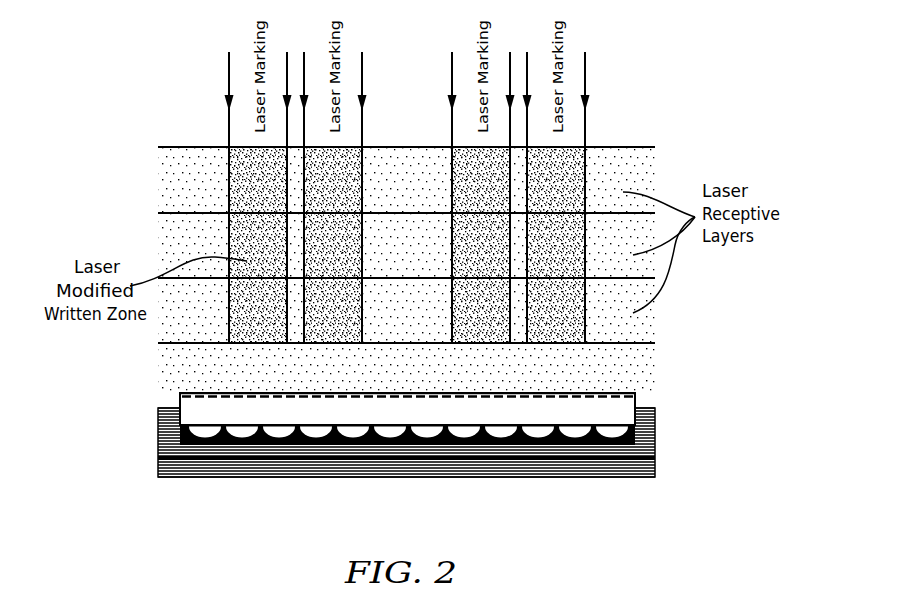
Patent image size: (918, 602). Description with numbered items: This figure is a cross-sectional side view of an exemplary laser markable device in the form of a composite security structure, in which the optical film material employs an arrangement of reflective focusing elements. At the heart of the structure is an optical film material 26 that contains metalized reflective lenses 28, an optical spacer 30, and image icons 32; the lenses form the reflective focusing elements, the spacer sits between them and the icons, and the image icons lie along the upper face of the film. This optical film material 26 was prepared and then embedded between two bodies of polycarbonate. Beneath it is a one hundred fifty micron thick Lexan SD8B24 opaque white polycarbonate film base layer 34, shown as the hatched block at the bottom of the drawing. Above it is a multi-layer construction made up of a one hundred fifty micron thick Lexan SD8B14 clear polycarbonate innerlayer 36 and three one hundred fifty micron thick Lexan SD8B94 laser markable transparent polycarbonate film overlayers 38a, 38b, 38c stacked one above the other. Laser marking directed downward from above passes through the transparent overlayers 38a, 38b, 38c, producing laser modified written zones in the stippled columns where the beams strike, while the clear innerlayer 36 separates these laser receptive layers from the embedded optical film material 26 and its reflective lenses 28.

The optical film material 26 is at (645, 398).
The metalized reflective lenses 28 is at (578, 430).
The optical spacer 30 is at (337, 405).
The image icons 32 is at (250, 392).
The opaque white polycarbonate film base layer 34 is at (473, 452).
The clear polycarbonate innerlayer 36 is at (633, 370).
The laser markable transparent polycarbonate film overlayer 38a is at (178, 326).
The laser markable transparent polycarbonate film overlayer 38b is at (180, 237).
The laser markable transparent polycarbonate film overlayer 38c is at (180, 177).